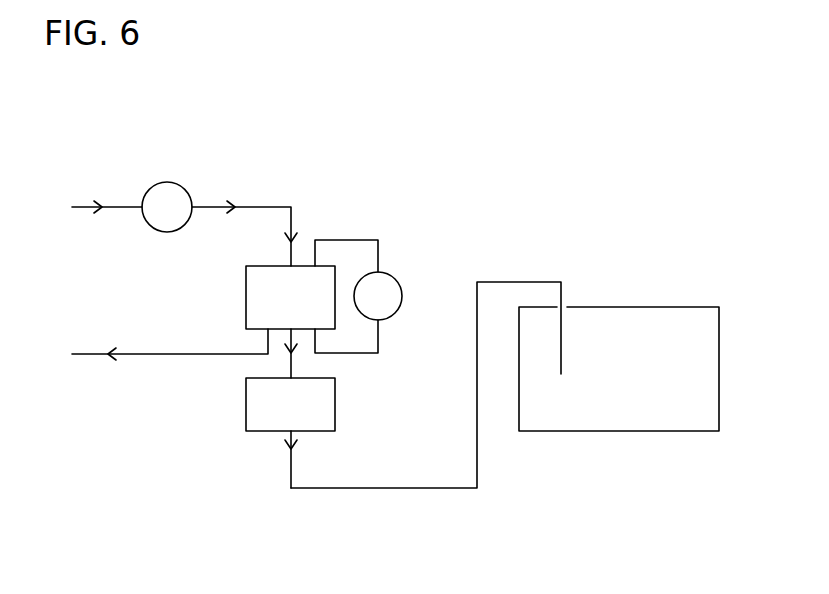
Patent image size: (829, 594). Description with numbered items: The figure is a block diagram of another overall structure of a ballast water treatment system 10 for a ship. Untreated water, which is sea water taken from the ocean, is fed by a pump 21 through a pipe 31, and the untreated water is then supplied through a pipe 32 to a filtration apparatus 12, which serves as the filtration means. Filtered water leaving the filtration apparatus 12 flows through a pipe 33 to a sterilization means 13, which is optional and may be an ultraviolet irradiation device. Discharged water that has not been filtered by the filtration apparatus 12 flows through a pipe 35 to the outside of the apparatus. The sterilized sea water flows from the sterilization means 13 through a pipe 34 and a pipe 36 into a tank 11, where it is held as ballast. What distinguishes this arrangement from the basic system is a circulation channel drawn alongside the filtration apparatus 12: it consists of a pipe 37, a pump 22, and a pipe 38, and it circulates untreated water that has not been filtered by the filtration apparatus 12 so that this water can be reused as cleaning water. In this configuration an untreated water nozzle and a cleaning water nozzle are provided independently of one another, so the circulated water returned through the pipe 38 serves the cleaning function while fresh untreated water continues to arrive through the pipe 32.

The liquid supply system 10 is at (376, 128).
The tank 11 is at (654, 332).
The filtration apparatus 12 is at (262, 298).
The sterilization means 13 is at (262, 405).
The pump 21 is at (167, 182).
The pump 22 is at (403, 297).
The pipe 31 is at (120, 206).
The pipe 32 is at (294, 256).
The pipe 33 is at (294, 364).
The pipe 34 is at (293, 462).
The pipe 35 is at (152, 354).
The pipe 36 is at (436, 489).
The pipe 37 is at (379, 345).
The pipe 38 is at (379, 258).